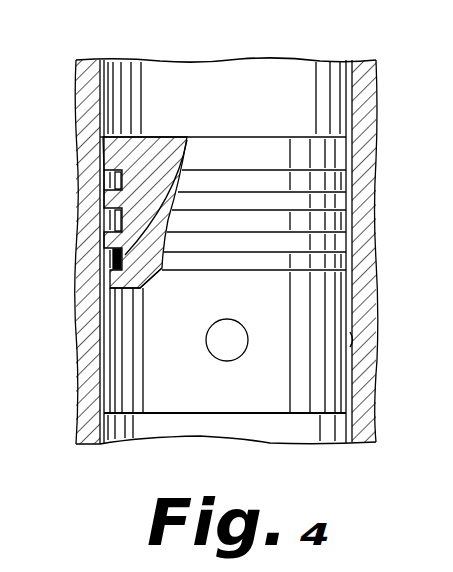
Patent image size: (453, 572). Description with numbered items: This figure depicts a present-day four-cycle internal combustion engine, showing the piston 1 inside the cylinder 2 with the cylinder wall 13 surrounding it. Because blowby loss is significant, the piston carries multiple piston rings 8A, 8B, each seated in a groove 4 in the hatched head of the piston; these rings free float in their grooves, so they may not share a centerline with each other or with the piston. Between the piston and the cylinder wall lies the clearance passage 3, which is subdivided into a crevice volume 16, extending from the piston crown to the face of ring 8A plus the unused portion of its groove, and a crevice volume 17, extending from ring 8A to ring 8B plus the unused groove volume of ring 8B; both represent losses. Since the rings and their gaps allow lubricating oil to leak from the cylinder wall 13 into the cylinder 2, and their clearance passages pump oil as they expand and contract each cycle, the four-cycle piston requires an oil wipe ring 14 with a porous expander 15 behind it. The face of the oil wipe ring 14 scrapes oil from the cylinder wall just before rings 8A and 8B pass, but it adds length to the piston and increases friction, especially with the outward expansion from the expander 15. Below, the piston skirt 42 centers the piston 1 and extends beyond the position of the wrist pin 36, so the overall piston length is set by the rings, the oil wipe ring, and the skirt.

The piston 1 is at (262, 306).
The cylinder 2 is at (228, 78).
The clearance passage 3 is at (103, 150).
The groove 4 is at (118, 174).
The piston ring 8A is at (114, 179).
The piston ring 8B is at (114, 220).
The cylinder wall 13 is at (96, 103).
The oil wipe ring 14 is at (114, 263).
The porous expander 15 is at (132, 277).
The crevice volume 16 is at (350, 150).
The crevice volume 17 is at (352, 200).
The wrist pin 36 is at (242, 353).
The piston skirt 42 is at (352, 339).